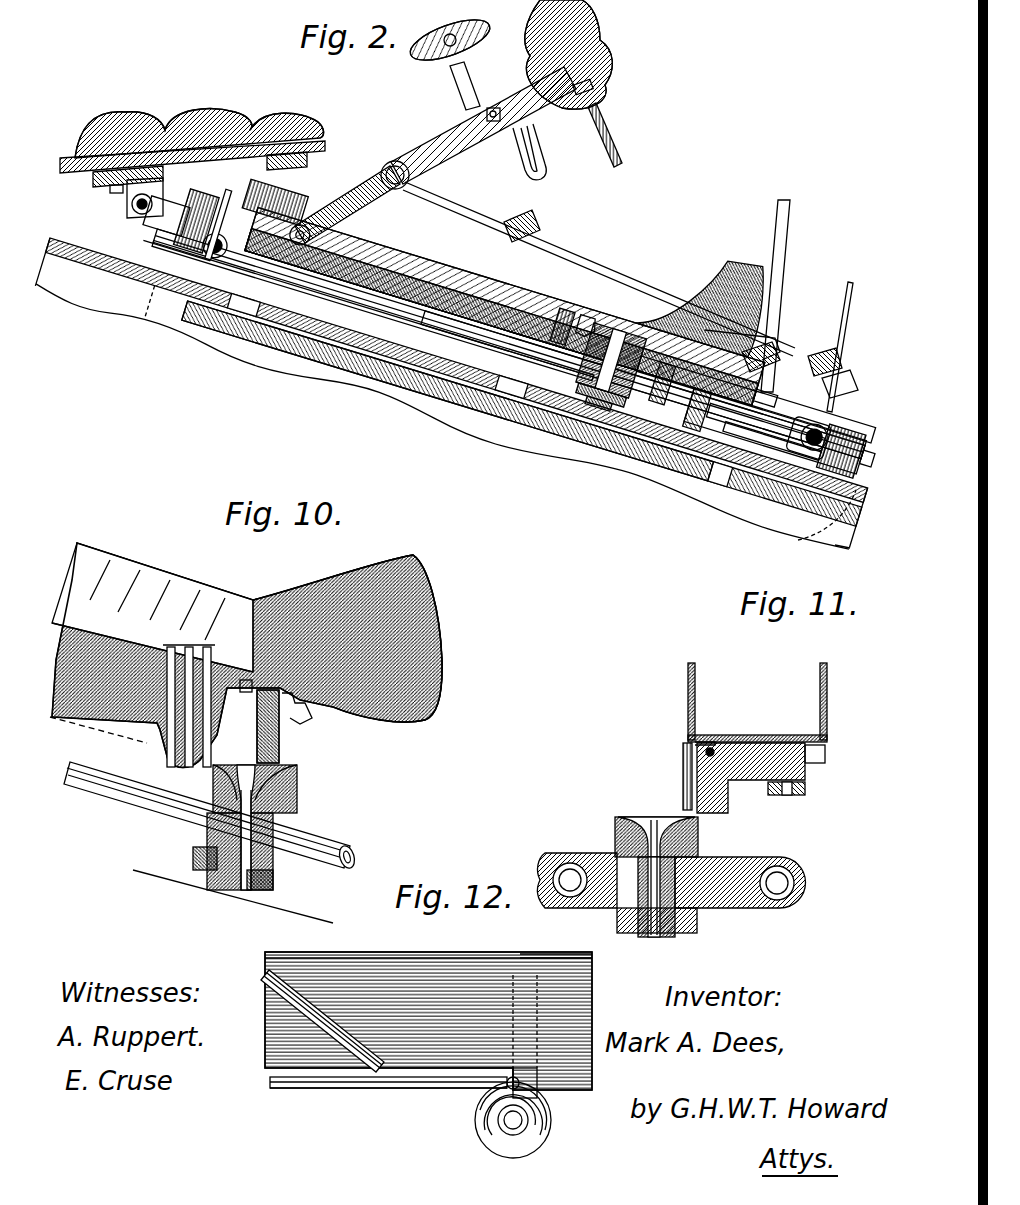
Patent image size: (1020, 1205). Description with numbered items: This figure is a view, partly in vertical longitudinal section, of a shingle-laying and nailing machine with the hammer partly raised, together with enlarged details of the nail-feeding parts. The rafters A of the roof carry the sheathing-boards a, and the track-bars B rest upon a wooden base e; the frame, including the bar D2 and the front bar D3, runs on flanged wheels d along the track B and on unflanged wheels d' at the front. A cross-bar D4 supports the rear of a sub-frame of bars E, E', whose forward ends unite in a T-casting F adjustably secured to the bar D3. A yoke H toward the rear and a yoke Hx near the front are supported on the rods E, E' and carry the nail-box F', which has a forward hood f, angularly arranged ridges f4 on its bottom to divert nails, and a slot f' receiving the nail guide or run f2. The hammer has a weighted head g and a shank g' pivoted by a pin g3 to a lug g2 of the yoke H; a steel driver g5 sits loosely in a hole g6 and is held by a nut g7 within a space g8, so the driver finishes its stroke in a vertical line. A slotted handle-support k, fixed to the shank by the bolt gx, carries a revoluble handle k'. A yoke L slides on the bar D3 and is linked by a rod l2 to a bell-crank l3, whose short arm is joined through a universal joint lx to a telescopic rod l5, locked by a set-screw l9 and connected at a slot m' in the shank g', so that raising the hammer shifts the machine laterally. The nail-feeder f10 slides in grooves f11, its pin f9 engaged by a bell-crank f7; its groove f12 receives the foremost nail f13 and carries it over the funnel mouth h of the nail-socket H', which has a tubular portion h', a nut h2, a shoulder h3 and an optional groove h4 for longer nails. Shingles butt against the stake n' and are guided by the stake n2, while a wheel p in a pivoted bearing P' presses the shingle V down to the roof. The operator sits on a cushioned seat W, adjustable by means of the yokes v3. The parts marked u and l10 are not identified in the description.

In FIG. 2, the seat W is at (181, 128).
In FIG. 2, the handle-support k is at (449, 61).
In FIG. 2, the handle k' is at (399, 63).
In FIG. 2, the bolt gx is at (485, 112).
In FIG. 2, the shank g' is at (483, 125).
In FIG. 2, the grip u is at (569, 54).
In FIG. 2, the weighted head g is at (591, 8).
In FIG. 2, the space or hole g8 is at (600, 60).
In FIG. 2, the nut g7 is at (610, 78).
In FIG. 2, the hole g6 is at (600, 96).
In FIG. 2, the steel driver g5 is at (621, 135).
In FIG. 2, the pin g3 is at (335, 190).
In FIG. 2, the lug g2 is at (365, 225).
In FIG. 2, the slot m' is at (431, 175).
In FIG. 2, the flanged wheels d is at (146, 215).
In FIG. 2, the yokes v3 is at (274, 210).
In FIG. 2, the bar D2 is at (128, 205).
In FIG. 2, the wooden base e is at (210, 250).
In FIG. 2, the rod l10 is at (220, 262).
In FIG. 2, the yoke H is at (509, 344).
In FIG. 2, the sheathing-boards a is at (448, 391).
In FIG. 2, the cross-bar D4 is at (223, 321).
In FIG. 2, the track-bars B is at (136, 335).
In FIG. 2, the rafters A is at (449, 395).
In FIG. 2, the set-screw l9 is at (525, 183).
In FIG. 2, the telescopic rod l5 is at (590, 252).
In FIG. 2, the nail-box F' is at (505, 306).
In FIG. 10, the nail-box F' is at (247, 655).
In FIG. 12, the nail-box F' is at (428, 1021).
In FIG. 2, the nail guide or run f2 is at (502, 317).
In FIG. 10, the nail guide or run f2 is at (152, 651).
In FIG. 12, the nail guide or run f2 is at (275, 1075).
In FIG. 2, the nail-feeder f10 is at (564, 326).
In FIG. 10, the nail-feeder f10 is at (280, 742).
In FIG. 11, the nail-feeder f10 is at (748, 795).
In FIG. 12, the nail-feeder f10 is at (527, 1036).
In FIG. 2, the nail-socket H' is at (613, 360).
In FIG. 10, the nail-socket H' is at (270, 827).
In FIG. 11, the nail-socket H' is at (671, 837).
In FIG. 12, the nail-socket H' is at (529, 1120).
In FIG. 2, the grooves f11 is at (640, 340).
In FIG. 10, the grooves f11 is at (318, 722).
In FIG. 11, the grooves f11 is at (826, 752).
In FIG. 2, the sub-frame bar E' is at (643, 385).
In FIG. 10, the sub-frame bar E' is at (220, 817).
In FIG. 11, the sub-frame bar E' is at (749, 884).
In FIG. 2, the nut h2 is at (578, 365).
In FIG. 10, the nut h2 is at (269, 886).
In FIG. 11, the nut h2 is at (690, 930).
In FIG. 2, the bearing P' is at (662, 376).
In FIG. 2, the yoke Hx is at (608, 397).
In FIG. 10, the yoke Hx is at (194, 852).
In FIG. 11, the yoke Hx is at (683, 920).
In FIG. 2, the hood f is at (706, 297).
In FIG. 10, the hood f is at (347, 638).
In FIG. 11, the hood f is at (751, 755).
In FIG. 2, the stake n2 is at (781, 296).
In FIG. 2, the stop or stake n' is at (837, 345).
In FIG. 2, the universal joint lx is at (756, 356).
In FIG. 2, the bell-crank l3 is at (818, 362).
In FIG. 2, the rod or link l2 is at (850, 370).
In FIG. 2, the T-casting F is at (756, 399).
In FIG. 11, the T-casting F is at (757, 702).
In FIG. 2, the wheel p is at (697, 412).
In FIG. 2, the shingle V is at (765, 427).
In FIG. 2, the front bar D3 is at (772, 441).
In FIG. 2, the yoke L is at (781, 432).
In FIG. 2, the unflanged wheels d' is at (825, 519).
In FIG. 10, the nail f13 is at (228, 912).
In FIG. 11, the nail f13 is at (705, 749).
In FIG. 12, the nail f13 is at (540, 1080).
In FIG. 10, the slot or groove f12 is at (282, 690).
In FIG. 11, the slot or groove f12 is at (682, 755).
In FIG. 10, the groove h4 is at (168, 770).
In FIG. 11, the groove h4 is at (680, 818).
In FIG. 10, the mouth h is at (276, 825).
In FIG. 11, the mouth h is at (656, 878).
In FIG. 12, the mouth h is at (487, 1131).
In FIG. 10, the shoulder h3 is at (285, 820).
In FIG. 11, the shoulder h3 is at (615, 850).
In FIG. 10, the tubular portion h' is at (233, 896).
In FIG. 11, the tubular portion h' is at (593, 951).
In FIG. 11, the bell-crank f7 is at (793, 799).
In FIG. 11, the pin f9 is at (786, 796).
In FIG. 11, the sub-frame bar E is at (577, 865).
In FIG. 12, the ridges f4 is at (323, 1021).
In FIG. 12, the slot f' is at (388, 1096).